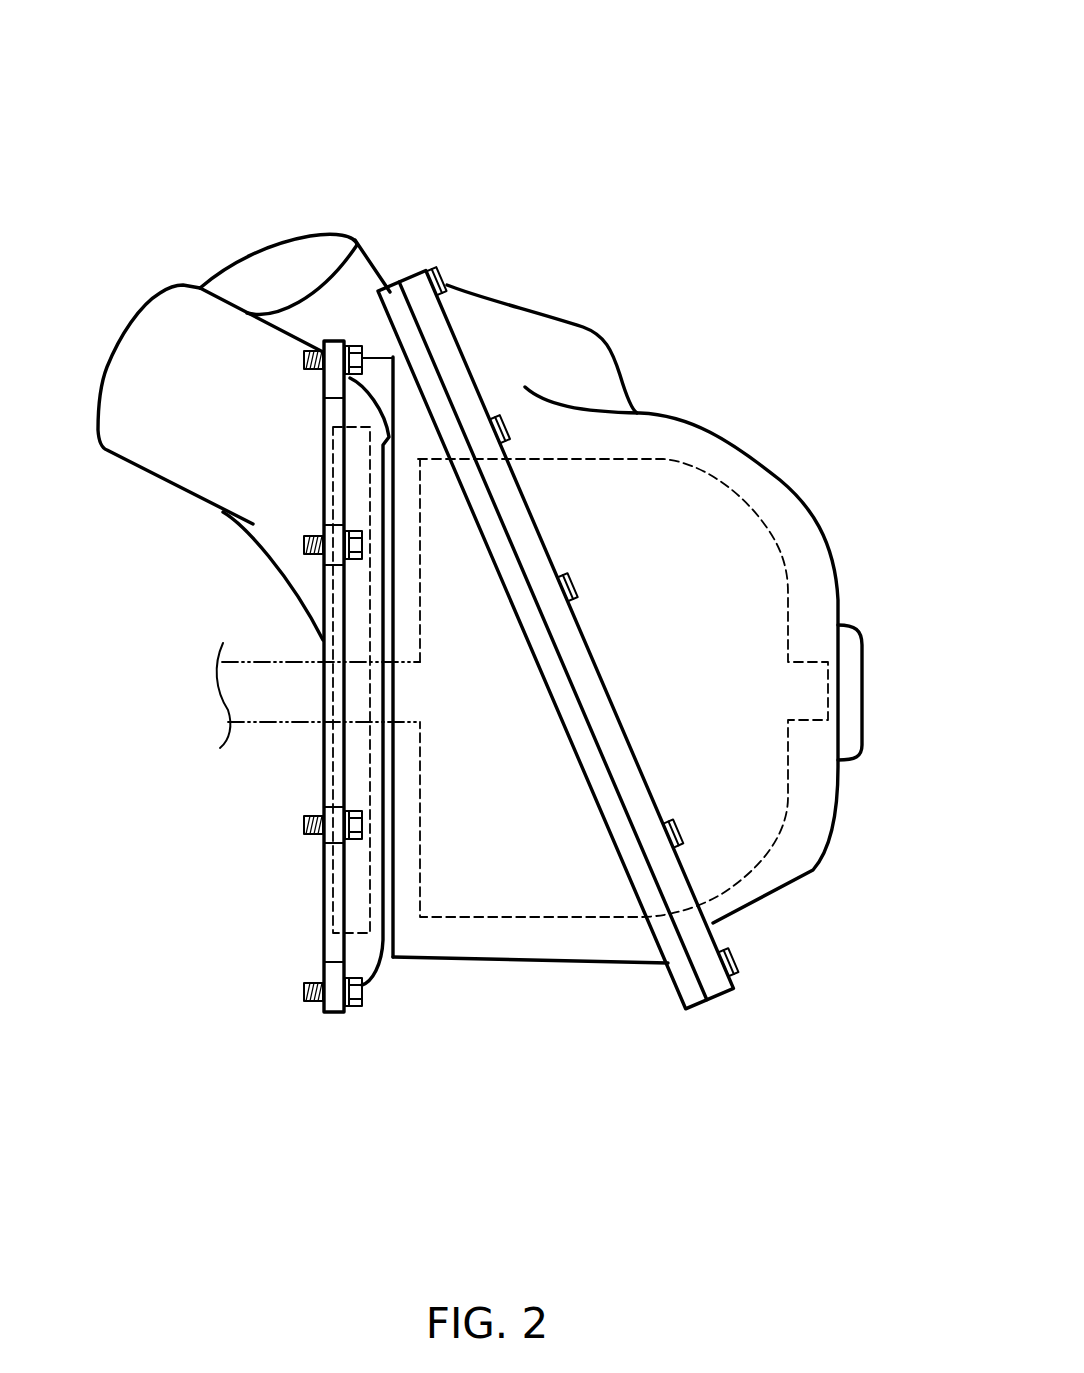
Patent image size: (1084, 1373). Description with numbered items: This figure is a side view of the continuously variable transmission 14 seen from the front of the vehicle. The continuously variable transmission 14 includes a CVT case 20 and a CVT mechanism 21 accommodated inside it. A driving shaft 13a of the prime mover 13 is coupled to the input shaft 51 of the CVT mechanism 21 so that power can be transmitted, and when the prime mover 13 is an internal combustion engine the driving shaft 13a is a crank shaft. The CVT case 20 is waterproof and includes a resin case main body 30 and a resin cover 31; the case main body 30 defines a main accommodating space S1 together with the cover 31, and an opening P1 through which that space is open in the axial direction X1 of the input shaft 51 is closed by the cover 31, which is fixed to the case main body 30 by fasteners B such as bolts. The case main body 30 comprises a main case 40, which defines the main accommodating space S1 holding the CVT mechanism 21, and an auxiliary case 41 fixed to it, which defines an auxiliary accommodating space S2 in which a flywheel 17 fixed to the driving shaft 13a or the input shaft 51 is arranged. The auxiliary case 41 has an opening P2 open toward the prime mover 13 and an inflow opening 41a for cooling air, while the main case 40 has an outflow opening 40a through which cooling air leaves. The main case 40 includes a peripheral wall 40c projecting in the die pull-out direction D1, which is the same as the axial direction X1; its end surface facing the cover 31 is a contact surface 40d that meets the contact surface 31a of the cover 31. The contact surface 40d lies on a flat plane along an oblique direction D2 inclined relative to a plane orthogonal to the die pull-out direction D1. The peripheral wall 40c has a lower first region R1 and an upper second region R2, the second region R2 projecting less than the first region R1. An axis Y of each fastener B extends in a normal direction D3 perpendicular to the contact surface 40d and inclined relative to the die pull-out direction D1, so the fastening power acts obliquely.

The prime mover 13 is at (287, 684).
The driving shaft 13a is at (258, 722).
The continuously variable transmission 14 is at (667, 613).
The flywheel 17 is at (333, 762).
The CVT case 20 is at (737, 1133).
The CVT mechanism 21 is at (790, 595).
The case main body 30 is at (385, 1087).
The cover 31 is at (552, 661).
The contact surface 31a is at (442, 388).
The main case 40 is at (434, 629).
The outflow opening 40a is at (285, 242).
The peripheral wall 40c is at (553, 963).
The contact surface 40d is at (430, 342).
The auxiliary case 41 is at (232, 679).
The inflow opening 41a is at (125, 340).
The input shaft 51 is at (803, 660).
The fastener B is at (440, 270).
The die pull-out direction D1 is at (715, 182).
The oblique direction D2 is at (715, 182).
The normal direction D3 is at (715, 182).
The opening P1 is at (520, 560).
The opening P2 is at (323, 895).
The first region R1 is at (650, 965).
The second region R2 is at (389, 292).
The main accommodating space S1 is at (613, 943).
The auxiliary accommodating space S2 is at (333, 933).
The axial direction X1 is at (127, 692).
The axis Y is at (457, 278).